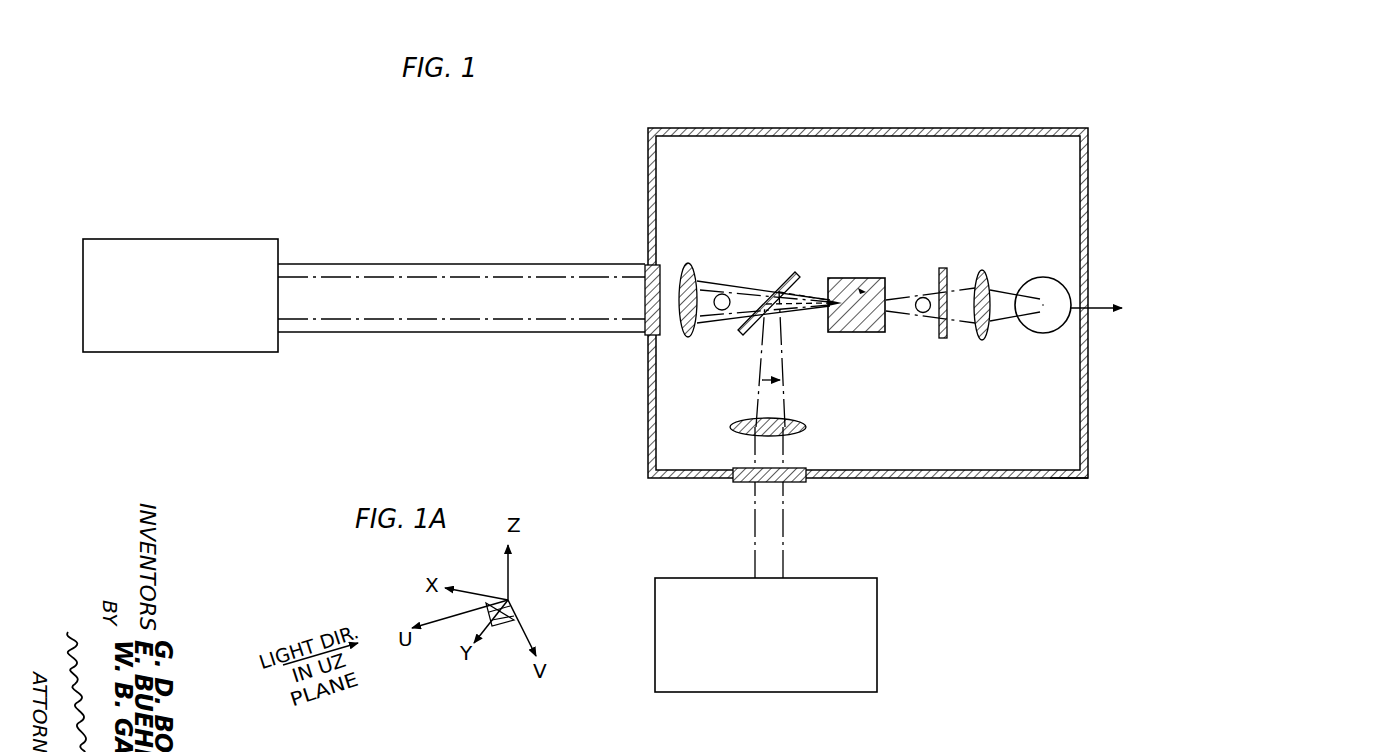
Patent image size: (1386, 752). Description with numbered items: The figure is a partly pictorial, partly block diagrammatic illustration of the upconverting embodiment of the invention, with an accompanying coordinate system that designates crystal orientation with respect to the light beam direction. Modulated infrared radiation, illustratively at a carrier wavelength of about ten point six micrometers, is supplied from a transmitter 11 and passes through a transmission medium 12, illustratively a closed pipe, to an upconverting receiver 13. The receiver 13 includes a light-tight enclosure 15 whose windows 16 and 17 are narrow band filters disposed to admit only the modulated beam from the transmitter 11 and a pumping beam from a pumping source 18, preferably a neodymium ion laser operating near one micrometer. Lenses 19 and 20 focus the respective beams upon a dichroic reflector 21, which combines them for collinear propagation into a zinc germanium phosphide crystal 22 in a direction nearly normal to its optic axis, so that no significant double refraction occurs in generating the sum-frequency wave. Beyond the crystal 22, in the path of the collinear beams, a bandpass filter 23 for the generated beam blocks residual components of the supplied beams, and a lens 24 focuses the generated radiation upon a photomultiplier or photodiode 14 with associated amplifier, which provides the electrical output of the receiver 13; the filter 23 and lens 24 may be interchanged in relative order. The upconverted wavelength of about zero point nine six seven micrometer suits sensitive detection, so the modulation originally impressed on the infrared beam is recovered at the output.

The transmitter 11 is at (178, 353).
The transmission medium 12 is at (441, 327).
The upconverting receiver 13 is at (858, 128).
The photomultiplier or photodiode 14 is at (1043, 277).
The light-tight enclosure 15 is at (1050, 480).
The window 16 is at (660, 266).
The window 17 is at (736, 468).
The pumping source 18 is at (878, 642).
The lens 19 is at (685, 268).
The lens 20 is at (806, 423).
The dichroic reflector 21 is at (742, 332).
The zinc germanium phosphide crystal 22 is at (853, 278).
The bandpass filter 23 is at (942, 268).
The lens 24 is at (984, 270).